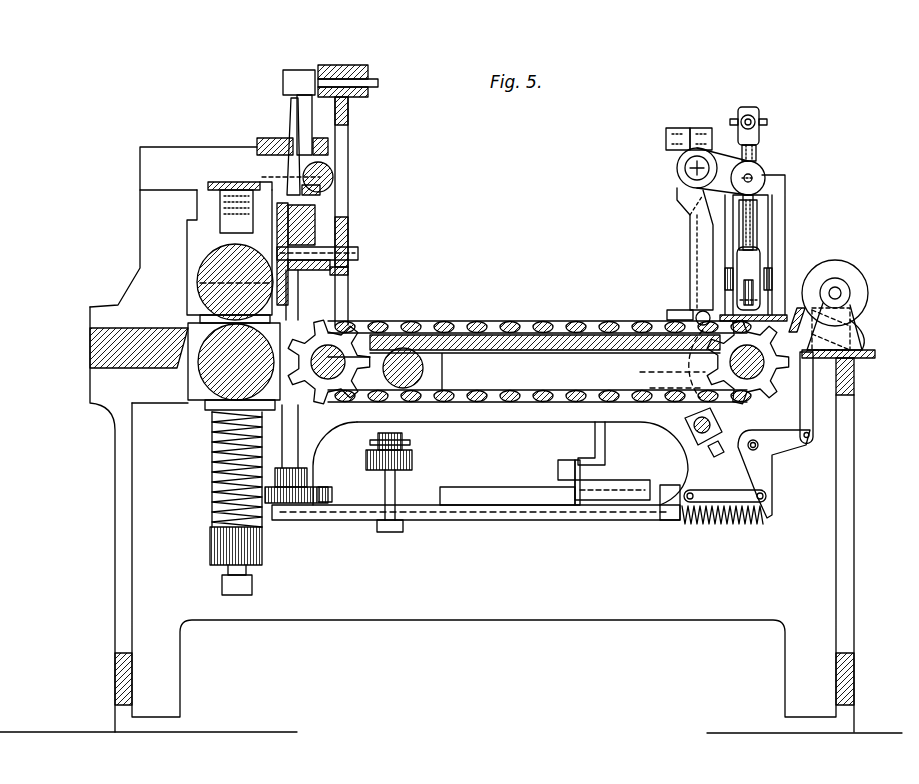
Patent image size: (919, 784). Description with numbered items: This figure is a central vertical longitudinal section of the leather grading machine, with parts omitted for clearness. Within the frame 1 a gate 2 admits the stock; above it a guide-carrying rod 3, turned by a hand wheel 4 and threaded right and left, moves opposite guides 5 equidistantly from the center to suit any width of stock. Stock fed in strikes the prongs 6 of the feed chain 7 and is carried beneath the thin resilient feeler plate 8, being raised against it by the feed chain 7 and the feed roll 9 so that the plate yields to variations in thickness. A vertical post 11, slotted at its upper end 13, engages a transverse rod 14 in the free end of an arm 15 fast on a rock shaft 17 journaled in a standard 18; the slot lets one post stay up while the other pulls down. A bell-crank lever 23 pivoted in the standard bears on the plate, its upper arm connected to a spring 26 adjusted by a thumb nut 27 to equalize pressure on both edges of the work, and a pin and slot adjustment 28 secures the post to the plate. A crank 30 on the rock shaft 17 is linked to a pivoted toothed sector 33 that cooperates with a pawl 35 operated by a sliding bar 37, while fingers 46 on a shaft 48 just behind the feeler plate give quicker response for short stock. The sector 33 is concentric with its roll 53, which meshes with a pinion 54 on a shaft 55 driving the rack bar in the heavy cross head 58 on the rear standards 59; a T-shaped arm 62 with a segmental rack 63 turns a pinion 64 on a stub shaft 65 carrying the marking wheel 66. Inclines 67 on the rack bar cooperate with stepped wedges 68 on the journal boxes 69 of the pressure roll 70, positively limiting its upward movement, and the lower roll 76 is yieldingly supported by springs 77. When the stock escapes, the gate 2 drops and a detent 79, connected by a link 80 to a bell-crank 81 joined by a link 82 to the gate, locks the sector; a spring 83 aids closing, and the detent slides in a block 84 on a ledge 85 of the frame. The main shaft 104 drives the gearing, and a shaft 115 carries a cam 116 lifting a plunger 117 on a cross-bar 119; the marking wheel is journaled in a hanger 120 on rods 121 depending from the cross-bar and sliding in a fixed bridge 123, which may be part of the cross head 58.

The frame 1 is at (451, 520).
The gate 2 is at (803, 300).
The guide-carrying rod 3 is at (841, 293).
The hand wheel 4 is at (852, 283).
The guides 5 is at (852, 318).
The prongs 6 is at (624, 320).
The feed chain 7 is at (455, 322).
The feeler plate 8 is at (772, 305).
The feed roll 9 is at (720, 362).
The vertical post 11 is at (753, 215).
The slot 13 is at (756, 190).
The transverse pin or rod 14 is at (765, 180).
The arm 15 is at (742, 165).
The rock shaft 17 is at (690, 170).
The standard 18 is at (713, 232).
The bell-crank lever 23 is at (758, 230).
The spring 26 is at (760, 112).
The thumb nut 27 is at (755, 125).
The pin and slot adjustment 28 is at (745, 300).
The crank 30 is at (682, 208).
The sector 33 is at (390, 520).
The pawl 35 is at (560, 465).
The sliding bar 37 is at (606, 446).
The fingers 46 is at (722, 316).
The shaft 48 is at (708, 445).
The roll 53 is at (325, 502).
The pinion 54 is at (296, 503).
The shaft 55 is at (298, 297).
The cross head 58 is at (150, 155).
The rear standards 59 is at (140, 240).
The T-shaped arm 62 is at (350, 102).
The segmental rack 63 is at (340, 258).
The pinion 64 is at (330, 268).
The stub shaft 65 is at (348, 271).
The marking wheel or die 66 is at (212, 290).
The inclines 67 is at (208, 186).
The stepped inclines or wedges 68 is at (220, 218).
The journal boxes 69 is at (215, 232).
The gage roll or pressure roll 70 is at (235, 283).
The lower roll 76 is at (212, 372).
The springs 77 is at (212, 470).
The detent 79 is at (672, 500).
The link 80 is at (758, 500).
The bell-crank 81 is at (772, 475).
The link 82 is at (813, 425).
The spring 83 is at (710, 524).
The block 84 is at (600, 500).
The ledge 85 is at (470, 520).
The main shaft 104 is at (425, 368).
The shaft 115 is at (320, 190).
The cam 116 is at (330, 172).
The plunger 117 is at (306, 125).
The cross-bar 119 is at (293, 70).
The hanger 120 is at (300, 228).
The rods 121 is at (315, 210).
The fixed bridge 123 is at (270, 138).